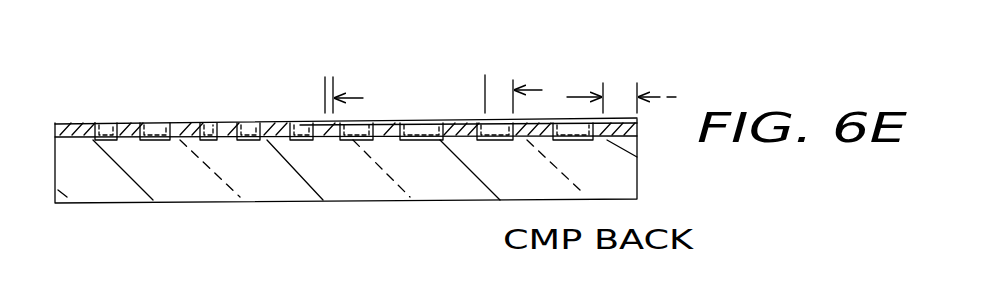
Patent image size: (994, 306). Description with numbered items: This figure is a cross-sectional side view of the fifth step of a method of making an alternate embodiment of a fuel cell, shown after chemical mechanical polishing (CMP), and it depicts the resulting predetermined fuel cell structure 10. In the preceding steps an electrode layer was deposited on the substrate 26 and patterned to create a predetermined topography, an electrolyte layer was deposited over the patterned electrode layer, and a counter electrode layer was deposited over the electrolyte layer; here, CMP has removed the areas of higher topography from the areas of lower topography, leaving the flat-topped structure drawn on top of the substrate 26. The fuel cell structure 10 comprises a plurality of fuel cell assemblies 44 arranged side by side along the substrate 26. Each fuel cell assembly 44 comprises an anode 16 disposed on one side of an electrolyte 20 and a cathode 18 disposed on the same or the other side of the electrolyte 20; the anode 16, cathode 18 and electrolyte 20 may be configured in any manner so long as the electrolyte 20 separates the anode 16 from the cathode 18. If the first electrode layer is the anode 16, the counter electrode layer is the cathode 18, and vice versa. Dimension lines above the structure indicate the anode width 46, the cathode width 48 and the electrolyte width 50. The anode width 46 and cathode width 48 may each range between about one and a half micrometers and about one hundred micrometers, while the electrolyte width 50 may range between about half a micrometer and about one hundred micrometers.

The fuel cell structure 10 is at (48, 81).
The fuel cell assembly 44 is at (93, 115).
The anode 16 is at (90, 127).
The cathode 18 is at (119, 121).
The electrolyte 20 is at (120, 143).
The substrate 26 is at (349, 187).
The electrolyte width 50 is at (323, 100).
The cathode width 48 is at (483, 90).
The anode width 46 is at (667, 97).